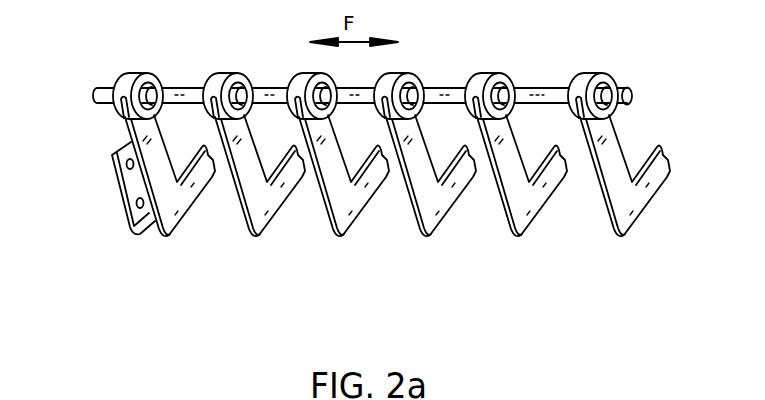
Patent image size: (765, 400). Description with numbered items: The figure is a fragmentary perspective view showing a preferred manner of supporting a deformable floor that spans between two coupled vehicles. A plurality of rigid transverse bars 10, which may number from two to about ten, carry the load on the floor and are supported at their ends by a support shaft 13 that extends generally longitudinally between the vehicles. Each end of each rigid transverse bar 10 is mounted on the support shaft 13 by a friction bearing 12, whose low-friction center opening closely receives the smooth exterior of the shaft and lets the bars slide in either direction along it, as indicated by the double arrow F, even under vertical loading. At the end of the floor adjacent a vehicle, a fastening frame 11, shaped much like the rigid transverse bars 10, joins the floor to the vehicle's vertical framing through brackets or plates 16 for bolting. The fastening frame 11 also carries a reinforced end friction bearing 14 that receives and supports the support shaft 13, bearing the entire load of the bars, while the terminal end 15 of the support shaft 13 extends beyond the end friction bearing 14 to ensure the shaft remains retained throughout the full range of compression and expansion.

The rigid transverse bars 10 is at (516, 212).
The fastening frame 11 is at (148, 233).
The friction bearing 12 is at (405, 76).
The support shaft 13 is at (272, 92).
The end friction bearing 14 is at (142, 72).
The terminal end 15 is at (98, 109).
The brackets or plates 16 is at (131, 181).